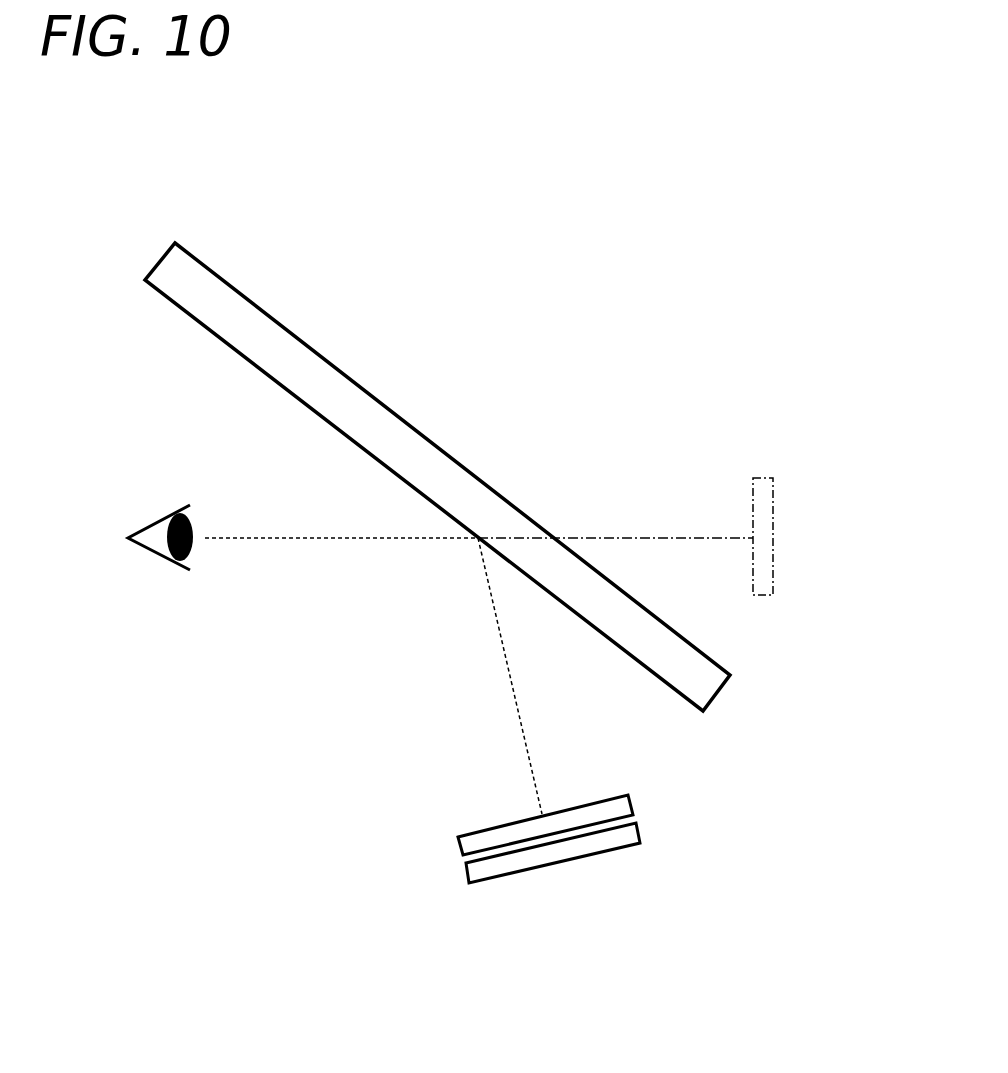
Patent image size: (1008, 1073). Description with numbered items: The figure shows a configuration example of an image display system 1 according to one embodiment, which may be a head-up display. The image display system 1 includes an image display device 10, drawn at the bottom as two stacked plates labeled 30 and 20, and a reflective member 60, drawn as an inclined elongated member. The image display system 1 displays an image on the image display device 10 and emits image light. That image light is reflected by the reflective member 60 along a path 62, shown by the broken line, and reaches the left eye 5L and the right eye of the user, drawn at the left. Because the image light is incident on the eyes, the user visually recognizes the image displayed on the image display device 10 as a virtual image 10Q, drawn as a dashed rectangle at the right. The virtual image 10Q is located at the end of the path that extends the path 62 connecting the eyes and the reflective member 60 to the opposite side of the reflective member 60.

The image display system 1 is at (621, 344).
The reflective member 60 is at (325, 358).
The left eye 5L is at (160, 553).
The virtual image 10Q is at (763, 477).
The path 62 is at (508, 665).
The image display device 10 is at (489, 846).
The lenticular lens / optical member 30 is at (458, 840).
The display panel 20 is at (466, 868).